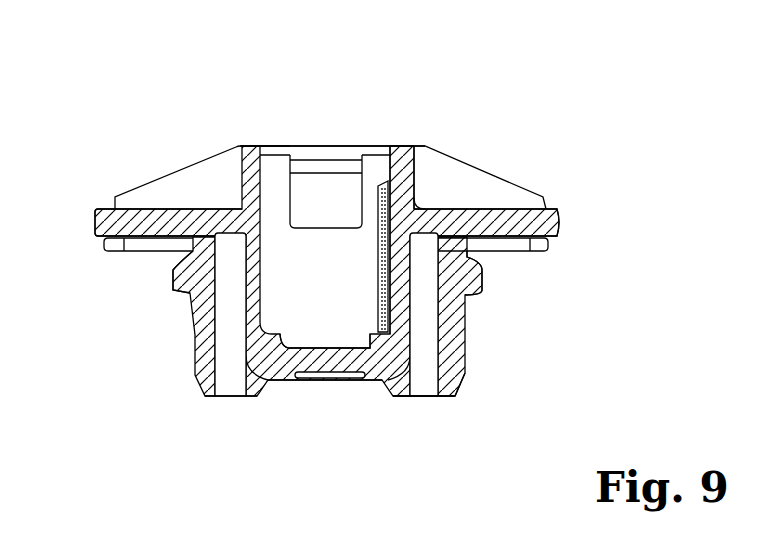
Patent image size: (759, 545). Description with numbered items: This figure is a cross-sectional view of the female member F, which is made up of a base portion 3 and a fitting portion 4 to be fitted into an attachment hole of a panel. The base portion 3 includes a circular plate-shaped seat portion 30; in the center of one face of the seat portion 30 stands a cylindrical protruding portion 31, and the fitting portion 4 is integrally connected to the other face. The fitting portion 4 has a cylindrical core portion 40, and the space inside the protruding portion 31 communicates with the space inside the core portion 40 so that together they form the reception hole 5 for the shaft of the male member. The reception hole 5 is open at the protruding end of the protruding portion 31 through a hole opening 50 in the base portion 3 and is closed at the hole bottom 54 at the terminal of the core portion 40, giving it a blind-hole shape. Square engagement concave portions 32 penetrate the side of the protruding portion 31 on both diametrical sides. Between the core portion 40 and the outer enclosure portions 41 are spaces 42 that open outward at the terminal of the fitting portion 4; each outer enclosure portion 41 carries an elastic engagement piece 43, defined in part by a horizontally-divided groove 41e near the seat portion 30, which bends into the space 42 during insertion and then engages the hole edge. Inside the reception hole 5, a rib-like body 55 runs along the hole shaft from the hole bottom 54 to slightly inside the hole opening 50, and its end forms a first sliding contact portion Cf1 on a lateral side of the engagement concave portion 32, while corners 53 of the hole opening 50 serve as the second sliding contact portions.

The base portion 3 is at (512, 190).
The seat portion 30 is at (557, 214).
The protruding portion 31 is at (415, 173).
The engagement concave portion 32 is at (318, 190).
The fitting portion 4 is at (464, 378).
The core portion 40 is at (286, 374).
The outer enclosure portion 41 is at (194, 362).
The horizontally-divided groove 41e is at (193, 244).
The space 42 is at (230, 332).
The elastic engagement piece 43 is at (176, 292).
The reception hole 5 is at (322, 300).
The hole opening 50 is at (376, 160).
The corner 53 is at (268, 147).
The hole bottom 54 is at (352, 346).
The rib-like body 55 is at (415, 207).
The first sliding contact portion Cf1 is at (386, 180).
The female member F is at (437, 122).